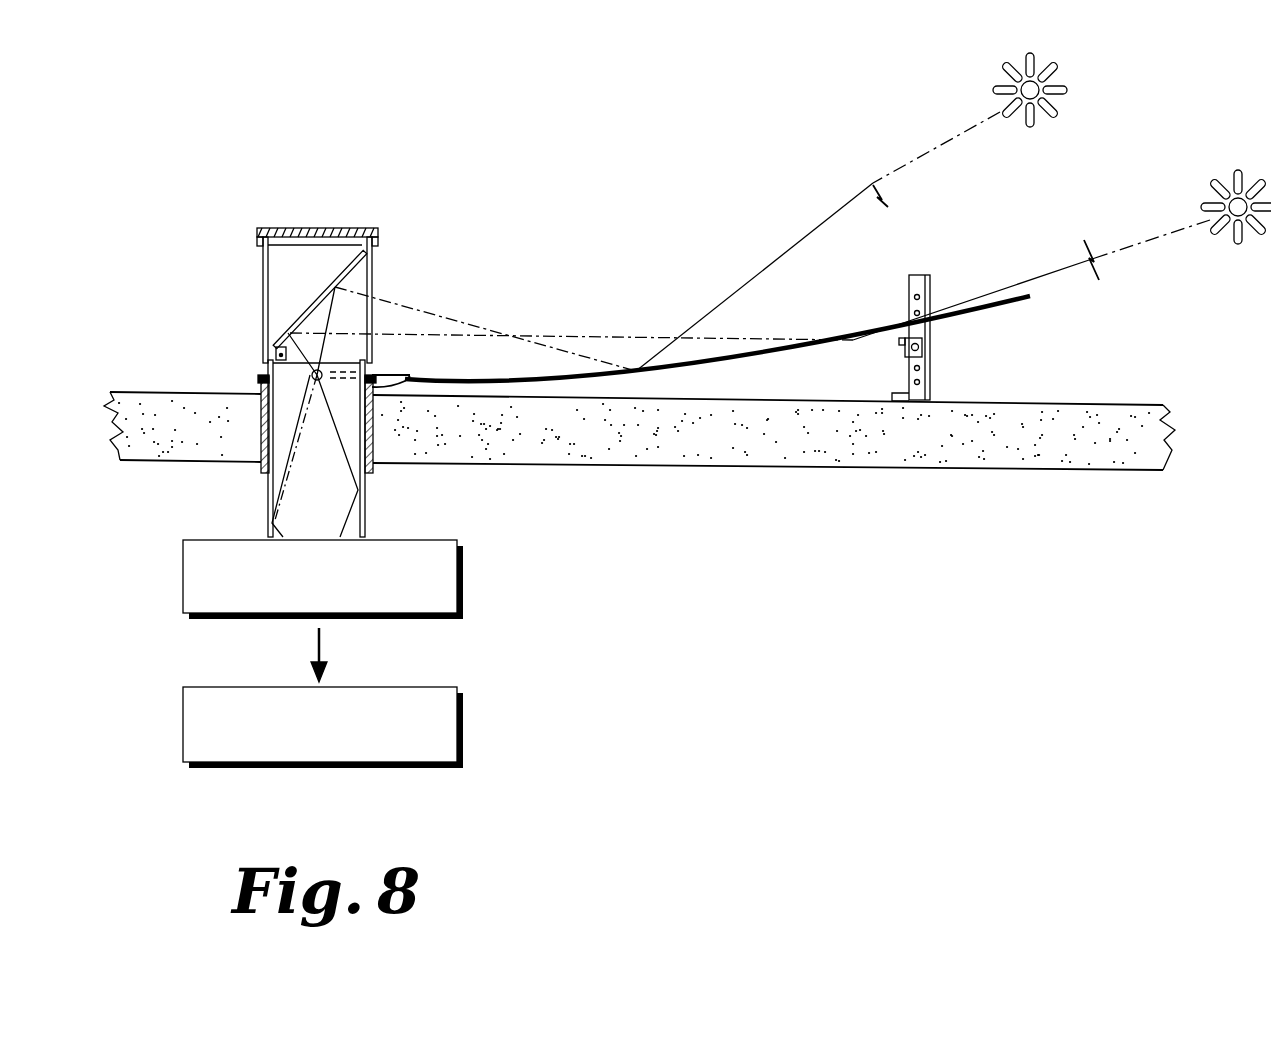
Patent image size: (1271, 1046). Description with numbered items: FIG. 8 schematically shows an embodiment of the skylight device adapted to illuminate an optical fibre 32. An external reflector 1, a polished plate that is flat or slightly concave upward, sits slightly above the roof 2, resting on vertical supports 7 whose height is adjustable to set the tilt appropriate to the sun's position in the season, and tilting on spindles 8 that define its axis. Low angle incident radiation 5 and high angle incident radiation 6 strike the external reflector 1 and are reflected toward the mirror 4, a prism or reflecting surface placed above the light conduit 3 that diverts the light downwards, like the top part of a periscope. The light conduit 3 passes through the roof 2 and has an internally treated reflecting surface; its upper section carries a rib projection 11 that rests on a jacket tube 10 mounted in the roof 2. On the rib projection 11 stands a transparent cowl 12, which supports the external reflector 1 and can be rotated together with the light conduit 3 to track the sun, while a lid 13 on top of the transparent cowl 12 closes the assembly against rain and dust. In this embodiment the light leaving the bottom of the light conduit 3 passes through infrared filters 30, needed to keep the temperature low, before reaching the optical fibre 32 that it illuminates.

The external reflector 1 is at (1030, 297).
The roof 2 is at (1115, 405).
The light conduit 3 is at (365, 502).
The mirror 4 is at (337, 287).
The low angle incident radiation 5 is at (1175, 222).
The high angle incident radiation 6 is at (952, 138).
The vertical supports 7 is at (930, 350).
The spindles 8 is at (262, 372).
The jacket tube 10 is at (262, 470).
The rib projection 11 is at (420, 375).
The transparent cowl 12 is at (375, 265).
The lid 13 is at (335, 228).
The infrared filters 30 is at (463, 582).
The optical fibre 32 is at (463, 730).